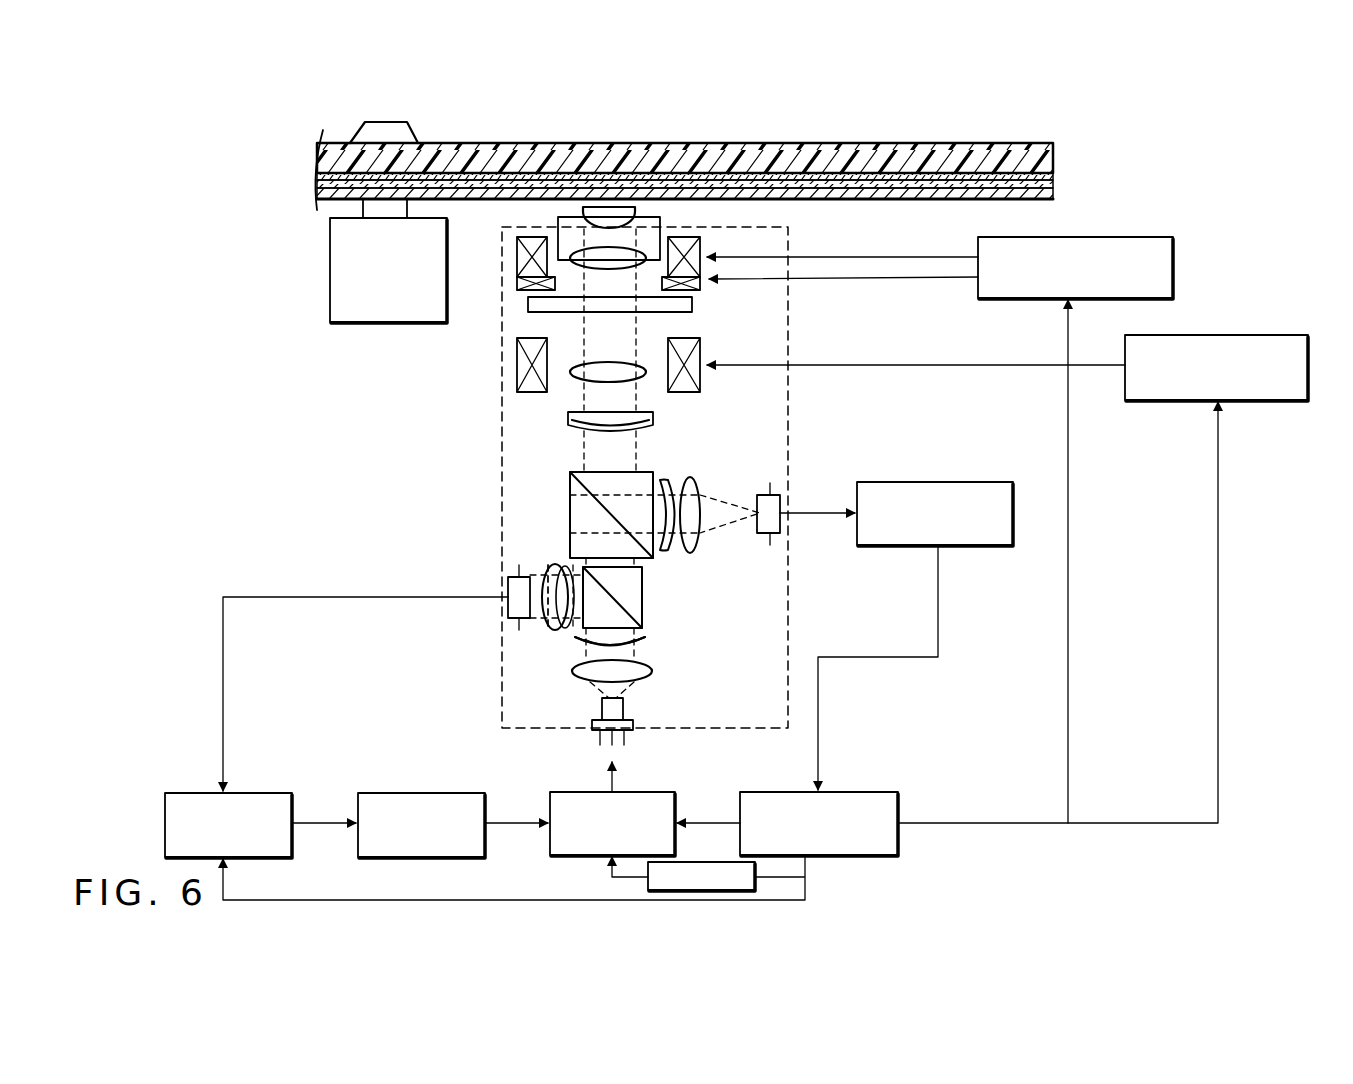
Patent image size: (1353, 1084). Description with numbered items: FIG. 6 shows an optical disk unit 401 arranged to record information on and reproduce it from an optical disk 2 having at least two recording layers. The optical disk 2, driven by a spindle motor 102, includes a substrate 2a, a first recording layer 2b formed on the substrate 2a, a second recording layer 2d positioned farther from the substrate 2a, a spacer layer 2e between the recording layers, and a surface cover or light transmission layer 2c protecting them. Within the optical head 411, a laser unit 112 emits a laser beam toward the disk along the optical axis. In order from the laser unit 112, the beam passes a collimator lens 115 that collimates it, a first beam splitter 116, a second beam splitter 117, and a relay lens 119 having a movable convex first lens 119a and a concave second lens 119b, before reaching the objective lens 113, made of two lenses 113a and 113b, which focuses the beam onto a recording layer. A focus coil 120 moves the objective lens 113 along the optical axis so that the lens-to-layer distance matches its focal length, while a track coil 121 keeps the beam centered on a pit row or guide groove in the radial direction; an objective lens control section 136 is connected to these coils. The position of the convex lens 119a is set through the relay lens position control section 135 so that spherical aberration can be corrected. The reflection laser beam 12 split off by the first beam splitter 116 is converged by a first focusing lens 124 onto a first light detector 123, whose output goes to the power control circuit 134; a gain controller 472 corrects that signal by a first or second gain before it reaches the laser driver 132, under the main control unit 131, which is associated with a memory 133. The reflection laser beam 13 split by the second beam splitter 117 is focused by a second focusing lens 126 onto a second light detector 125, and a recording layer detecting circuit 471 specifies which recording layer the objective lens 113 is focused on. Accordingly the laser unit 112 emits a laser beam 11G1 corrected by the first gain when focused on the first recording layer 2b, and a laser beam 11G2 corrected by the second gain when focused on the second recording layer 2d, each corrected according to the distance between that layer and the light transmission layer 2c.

The optical disk 2 is at (684, 173).
The substrate 2a is at (714, 150).
The first recording layer 2b is at (827, 196).
The surface cover (light transmission layer) 2c is at (690, 203).
The second recording layer 2d is at (757, 203).
The spacer layer 2e is at (982, 201).
The spindle motor 102 is at (350, 323).
The optical head 411 is at (703, 732).
The optical disk unit 401 is at (1256, 588).
The objective lens 113 is at (670, 281).
The lens of objective lens 113a is at (617, 218).
The lens of objective lens 113b is at (618, 261).
The focus coil 120 is at (517, 263).
The track coil 121 is at (700, 283).
The relay lens 119 is at (661, 410).
The first lens (convex lens) 119a is at (630, 376).
The second lens (concave lens) 119b is at (636, 426).
The second beam splitter 117 is at (570, 506).
The reflection laser beam 13 is at (666, 554).
The second focusing lens 126 is at (703, 548).
The second light detector 125 is at (767, 494).
The first beam splitter 116 is at (645, 609).
The first focusing lens 124 is at (553, 571).
The reflection laser beam 12 is at (568, 632).
The first light detector 123 is at (510, 584).
The laser beam corrected by first gain 11G1 is at (647, 644).
The laser beam corrected by second gain 11G2 is at (682, 655).
The collimator lens 115 is at (652, 679).
The laser unit 112 is at (592, 725).
The power control circuit 134 is at (256, 792).
The gain controller 472 is at (418, 792).
The laser driver 132 is at (571, 791).
The main control unit 131 is at (872, 791).
The memory 133 is at (648, 884).
The recording layer detecting circuit 471 is at (930, 481).
The objective lens control section 136 is at (1108, 236).
The relay lens position control section 135 is at (1230, 334).